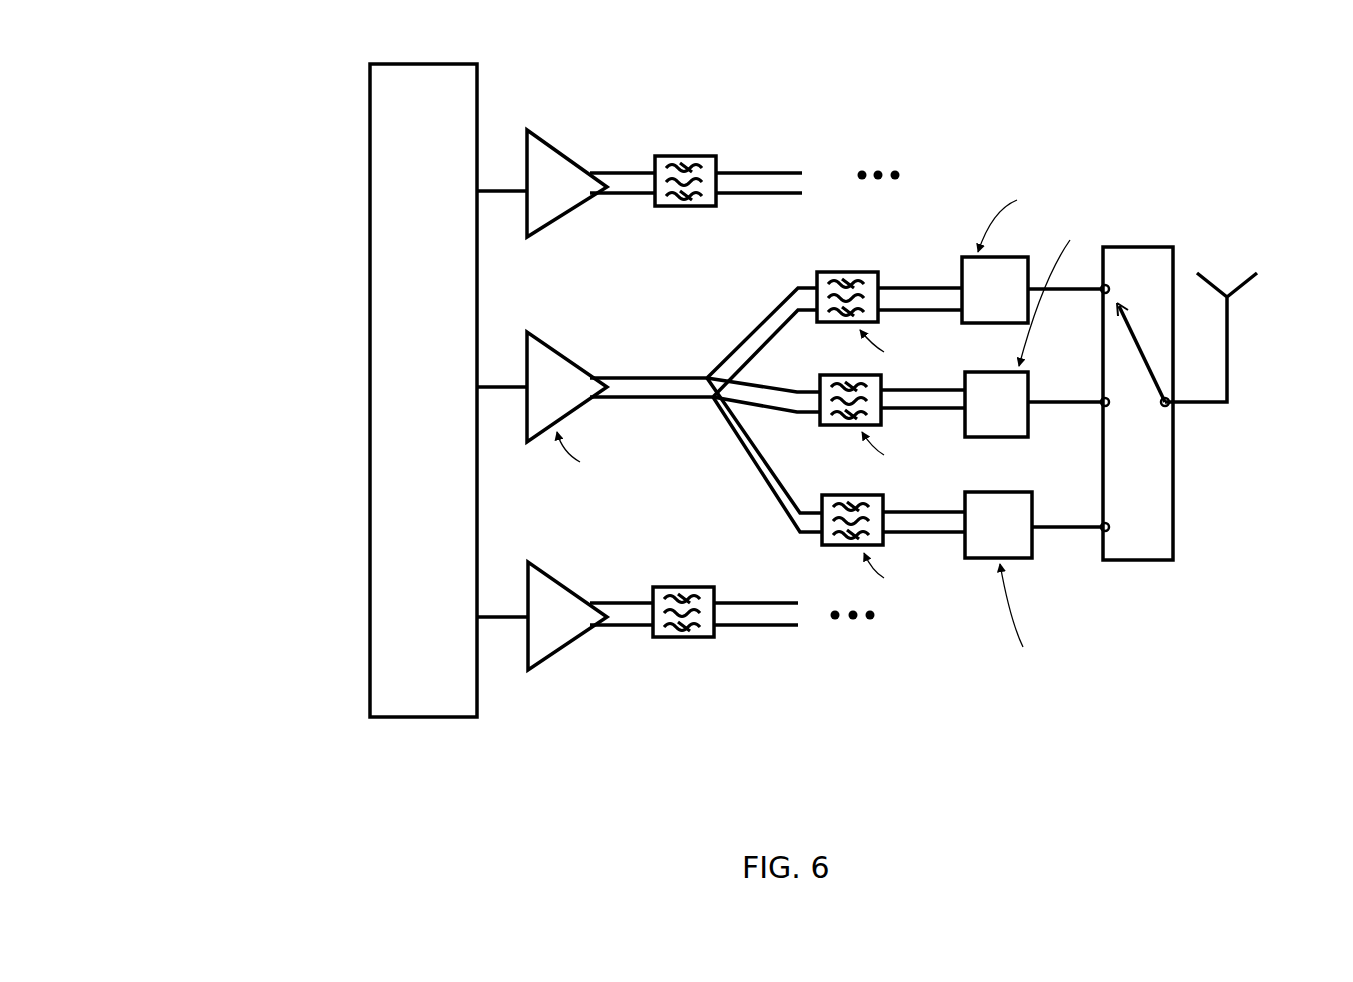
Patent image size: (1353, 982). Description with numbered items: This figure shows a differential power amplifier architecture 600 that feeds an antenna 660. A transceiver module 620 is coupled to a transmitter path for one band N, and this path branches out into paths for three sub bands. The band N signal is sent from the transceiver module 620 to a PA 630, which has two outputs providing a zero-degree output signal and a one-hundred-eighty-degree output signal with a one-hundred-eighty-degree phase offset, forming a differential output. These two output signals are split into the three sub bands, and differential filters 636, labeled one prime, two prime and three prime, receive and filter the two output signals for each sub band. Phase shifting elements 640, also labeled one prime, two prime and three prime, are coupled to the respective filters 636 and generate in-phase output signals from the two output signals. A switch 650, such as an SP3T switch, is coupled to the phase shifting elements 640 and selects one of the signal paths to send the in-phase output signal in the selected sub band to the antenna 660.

The differential power amplifier architecture 600 is at (252, 90).
The transceiver module 620 is at (370, 630).
The PA 630 is at (594, 108).
The differential filters 636 is at (738, 128).
The phase shifting elements 640 is at (1020, 132).
The switch 650 is at (1152, 562).
The antenna 660 is at (1243, 337).